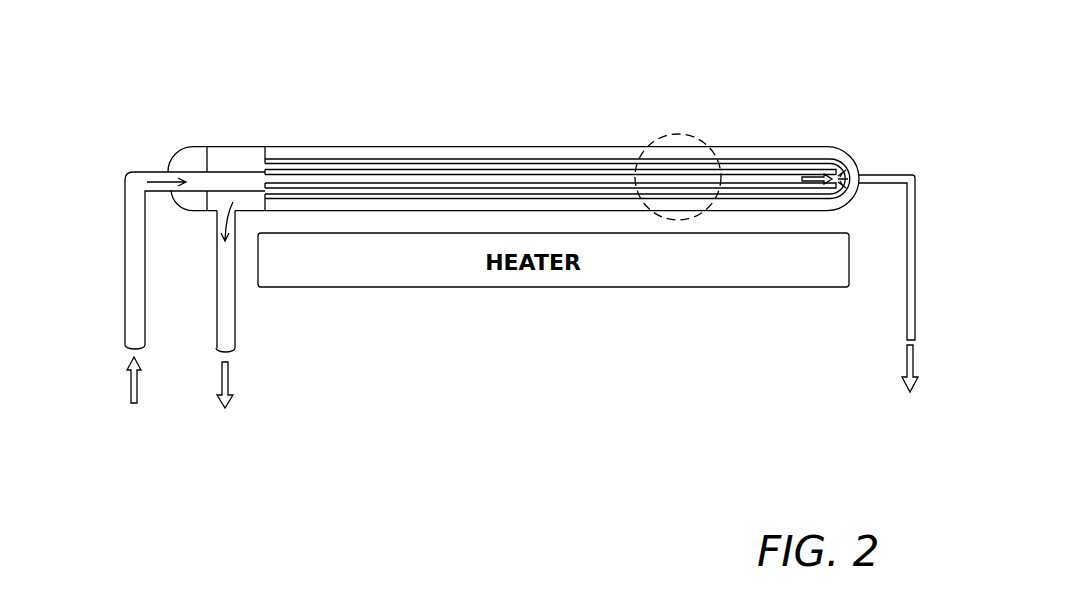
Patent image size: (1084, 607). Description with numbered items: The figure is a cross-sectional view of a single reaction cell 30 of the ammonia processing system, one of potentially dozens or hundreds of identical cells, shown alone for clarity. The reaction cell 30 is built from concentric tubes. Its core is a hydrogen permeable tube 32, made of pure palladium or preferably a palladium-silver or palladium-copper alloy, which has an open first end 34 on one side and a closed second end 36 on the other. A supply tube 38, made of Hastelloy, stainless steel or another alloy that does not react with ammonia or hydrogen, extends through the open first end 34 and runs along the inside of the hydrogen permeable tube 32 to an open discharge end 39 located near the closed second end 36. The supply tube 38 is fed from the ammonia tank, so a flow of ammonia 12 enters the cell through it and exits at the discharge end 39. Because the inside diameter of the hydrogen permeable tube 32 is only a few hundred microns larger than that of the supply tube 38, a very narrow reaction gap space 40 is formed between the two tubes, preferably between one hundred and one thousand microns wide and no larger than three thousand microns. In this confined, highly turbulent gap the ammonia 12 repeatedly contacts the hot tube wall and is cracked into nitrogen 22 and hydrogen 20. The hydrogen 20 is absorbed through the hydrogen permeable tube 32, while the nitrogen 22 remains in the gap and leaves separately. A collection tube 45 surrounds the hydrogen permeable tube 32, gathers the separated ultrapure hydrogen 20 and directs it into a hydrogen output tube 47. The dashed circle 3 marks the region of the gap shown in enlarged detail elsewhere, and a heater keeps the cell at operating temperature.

The detail region of reactor tube 3 is at (692, 143).
The ammonia 12 is at (100, 413).
The hydrogen 20 is at (860, 392).
The nitrogen 22 is at (276, 409).
The reaction cell 30 is at (633, 78).
The hydrogen permeable tube 32 is at (341, 146).
The open first end 34 is at (262, 165).
The closed second end 36 is at (855, 168).
The supply tube 38 is at (537, 161).
The open discharge end 39 is at (838, 168).
The reaction gap space 40 is at (466, 165).
The collection tube 45 is at (745, 145).
The hydrogen output tube 47 is at (870, 172).